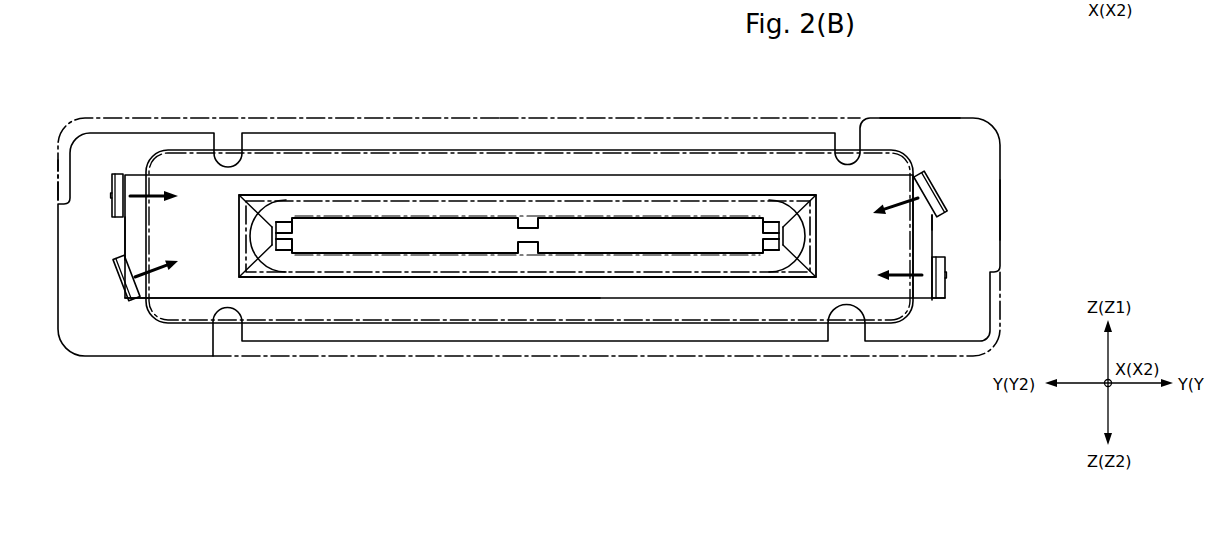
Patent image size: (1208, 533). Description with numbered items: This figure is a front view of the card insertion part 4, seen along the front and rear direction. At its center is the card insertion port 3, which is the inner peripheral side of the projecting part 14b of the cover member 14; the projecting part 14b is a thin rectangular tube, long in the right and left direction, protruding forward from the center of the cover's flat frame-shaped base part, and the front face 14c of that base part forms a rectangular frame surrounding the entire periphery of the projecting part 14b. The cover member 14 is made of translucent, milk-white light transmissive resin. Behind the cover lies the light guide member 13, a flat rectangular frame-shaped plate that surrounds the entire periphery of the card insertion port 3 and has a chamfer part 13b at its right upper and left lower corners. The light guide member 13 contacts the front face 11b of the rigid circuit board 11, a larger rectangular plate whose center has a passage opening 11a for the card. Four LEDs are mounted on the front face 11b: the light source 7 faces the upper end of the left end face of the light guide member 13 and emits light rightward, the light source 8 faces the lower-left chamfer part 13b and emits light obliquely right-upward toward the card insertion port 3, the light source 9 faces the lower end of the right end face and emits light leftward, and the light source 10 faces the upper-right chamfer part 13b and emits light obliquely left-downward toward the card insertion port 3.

The card insertion port 3 is at (405, 246).
The card insertion part 4 is at (1030, 119).
The light source 7 is at (112, 208).
The light source 8 is at (113, 268).
The light source 9 is at (941, 300).
The light source 10 is at (948, 205).
The rigid circuit board 11 is at (915, 119).
The passage opening 11a is at (606, 196).
The front face 11b is at (952, 151).
The light guide member 13 is at (934, 238).
The chamfer part 13b is at (124, 291).
The cover member 14 is at (428, 120).
The projecting part 14b is at (308, 150).
The front face 14c is at (142, 125).